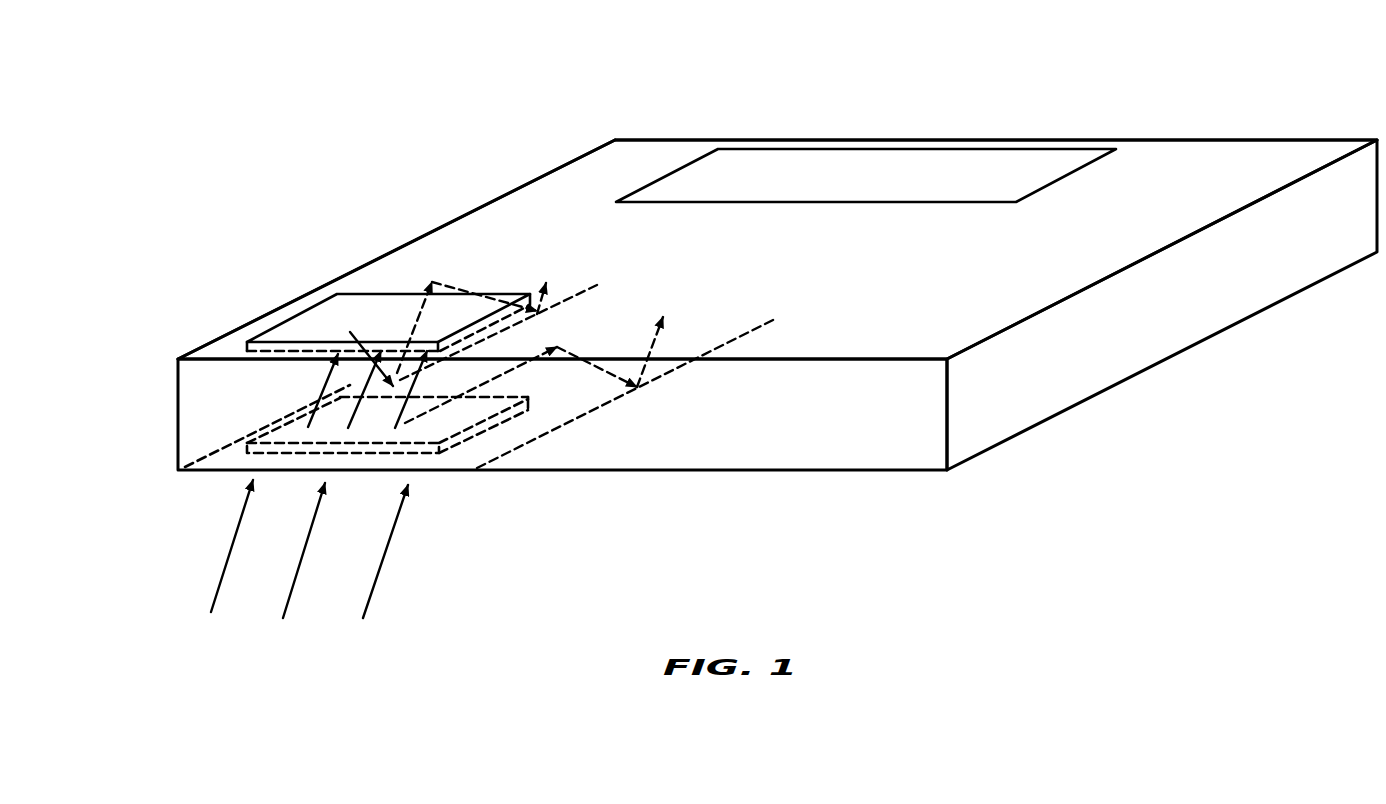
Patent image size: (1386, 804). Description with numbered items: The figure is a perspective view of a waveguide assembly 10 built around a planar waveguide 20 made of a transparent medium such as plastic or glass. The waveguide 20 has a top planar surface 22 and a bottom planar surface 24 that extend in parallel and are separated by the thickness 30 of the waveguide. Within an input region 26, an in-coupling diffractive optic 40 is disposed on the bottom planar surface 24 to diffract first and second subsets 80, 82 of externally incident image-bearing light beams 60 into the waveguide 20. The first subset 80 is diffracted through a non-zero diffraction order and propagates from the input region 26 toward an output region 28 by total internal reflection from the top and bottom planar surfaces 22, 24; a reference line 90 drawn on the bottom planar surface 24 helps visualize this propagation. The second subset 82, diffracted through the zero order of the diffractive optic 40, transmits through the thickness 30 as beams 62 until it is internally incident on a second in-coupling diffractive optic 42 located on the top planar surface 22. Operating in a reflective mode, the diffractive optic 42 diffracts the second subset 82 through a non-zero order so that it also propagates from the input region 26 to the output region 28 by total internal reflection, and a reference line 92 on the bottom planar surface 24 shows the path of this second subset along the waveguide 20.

The waveguide assembly 10 is at (702, 65).
The planar waveguide 20 is at (427, 233).
The top planar surface 22 is at (1045, 285).
The bottom planar surface 24 is at (1028, 428).
The input region 26 is at (247, 308).
The output region 28 is at (577, 156).
The thickness 30 is at (177, 402).
The in-coupling diffractive optic 40 is at (442, 458).
The in-coupling diffractive optic 42 is at (325, 310).
The image-bearing light beams 60 is at (217, 598).
The beams 62 is at (420, 392).
The first subset 80 is at (652, 347).
The second subset 82 is at (548, 288).
The reference line 90 is at (752, 328).
The reference line 92 is at (558, 307).